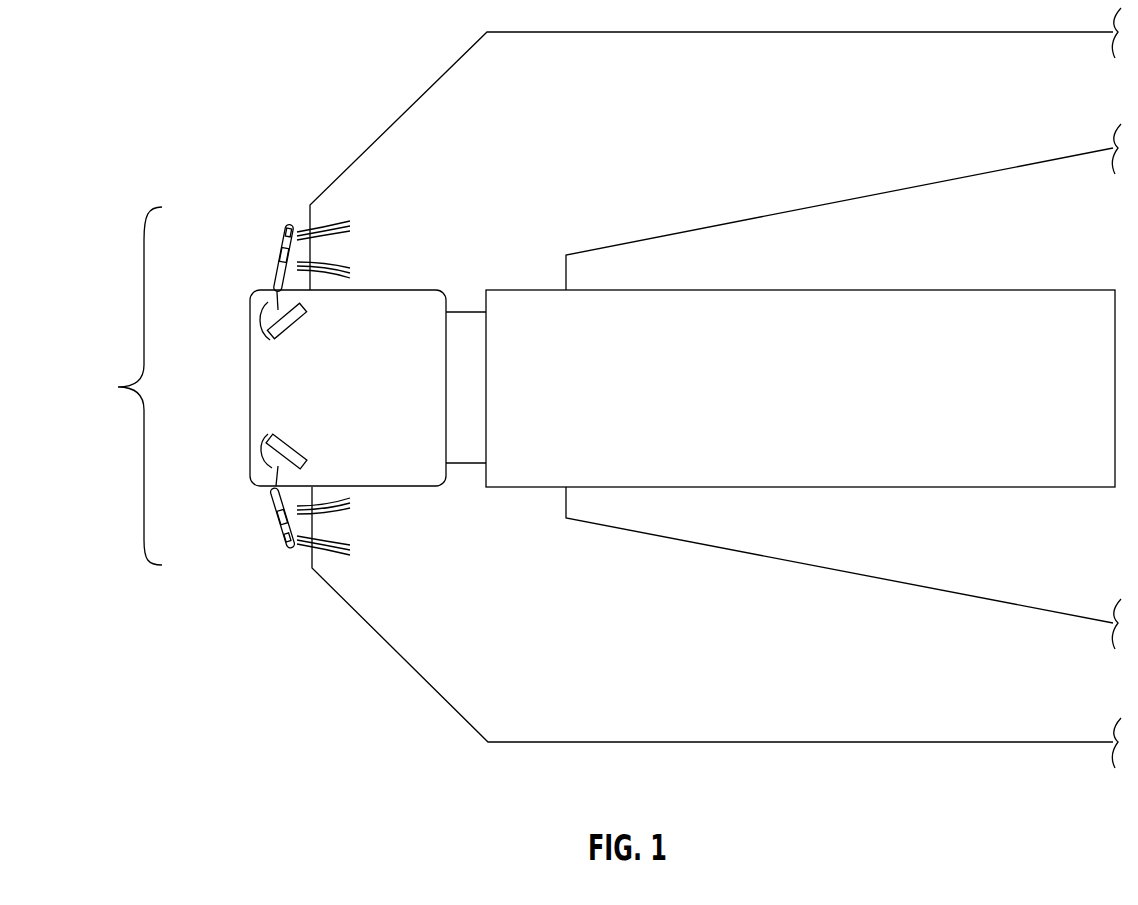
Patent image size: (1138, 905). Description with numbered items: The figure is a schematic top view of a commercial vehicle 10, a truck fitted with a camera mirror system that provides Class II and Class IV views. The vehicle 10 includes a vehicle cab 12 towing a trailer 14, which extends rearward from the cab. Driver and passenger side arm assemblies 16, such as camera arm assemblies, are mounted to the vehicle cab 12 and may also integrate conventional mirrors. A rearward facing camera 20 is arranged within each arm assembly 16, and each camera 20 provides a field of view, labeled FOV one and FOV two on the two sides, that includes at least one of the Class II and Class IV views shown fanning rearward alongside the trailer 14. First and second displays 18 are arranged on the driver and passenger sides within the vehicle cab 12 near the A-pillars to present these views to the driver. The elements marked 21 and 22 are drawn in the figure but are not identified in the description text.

The commercial vehicle 10 is at (266, 126).
The vehicle cab 12 is at (253, 491).
The trailer 14 is at (1020, 287).
The arm assembly 16 is at (288, 233).
The display 18 is at (299, 330).
The rearward facing camera 20 is at (281, 246).
The sensor window 21 is at (287, 223).
The sensor assembly 22 is at (123, 386).